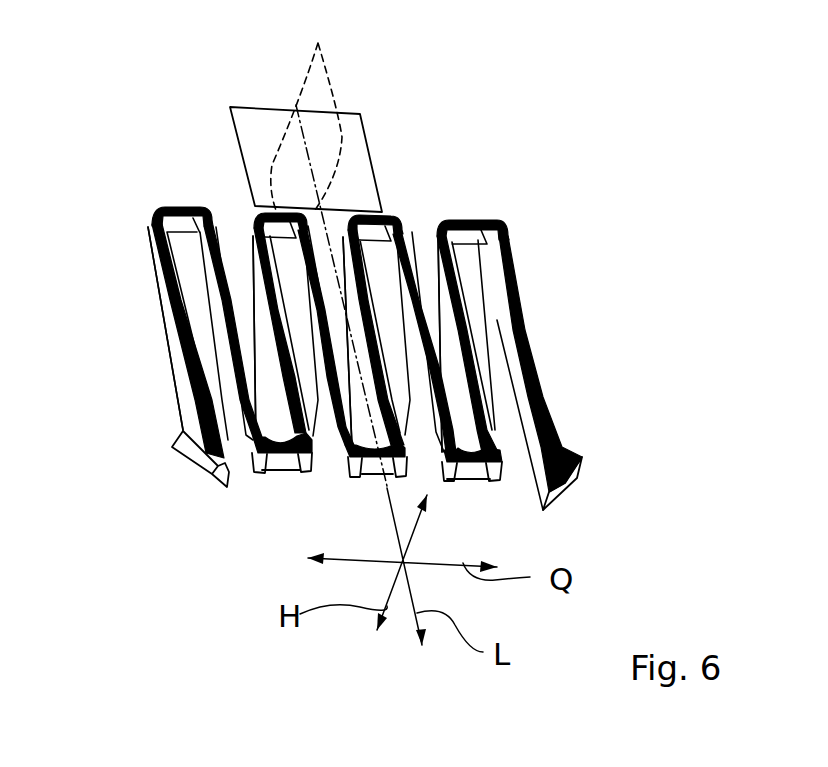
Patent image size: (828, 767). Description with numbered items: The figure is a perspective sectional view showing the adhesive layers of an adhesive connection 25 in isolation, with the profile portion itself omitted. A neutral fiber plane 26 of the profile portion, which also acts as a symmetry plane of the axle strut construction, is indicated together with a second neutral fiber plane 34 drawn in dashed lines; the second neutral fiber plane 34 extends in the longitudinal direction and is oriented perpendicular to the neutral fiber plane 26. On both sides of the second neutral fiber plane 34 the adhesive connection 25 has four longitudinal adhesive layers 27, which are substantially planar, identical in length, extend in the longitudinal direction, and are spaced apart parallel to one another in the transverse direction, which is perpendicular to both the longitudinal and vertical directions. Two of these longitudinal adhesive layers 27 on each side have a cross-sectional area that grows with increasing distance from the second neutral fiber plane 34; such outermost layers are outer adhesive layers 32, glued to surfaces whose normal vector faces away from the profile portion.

The adhesive connection 25 is at (374, 325).
The neutral fiber plane 26 is at (268, 135).
The longitudinal adhesive layer 27 is at (387, 403).
The outer adhesive layer 32 is at (185, 334).
The second neutral fiber plane 34 is at (307, 95).